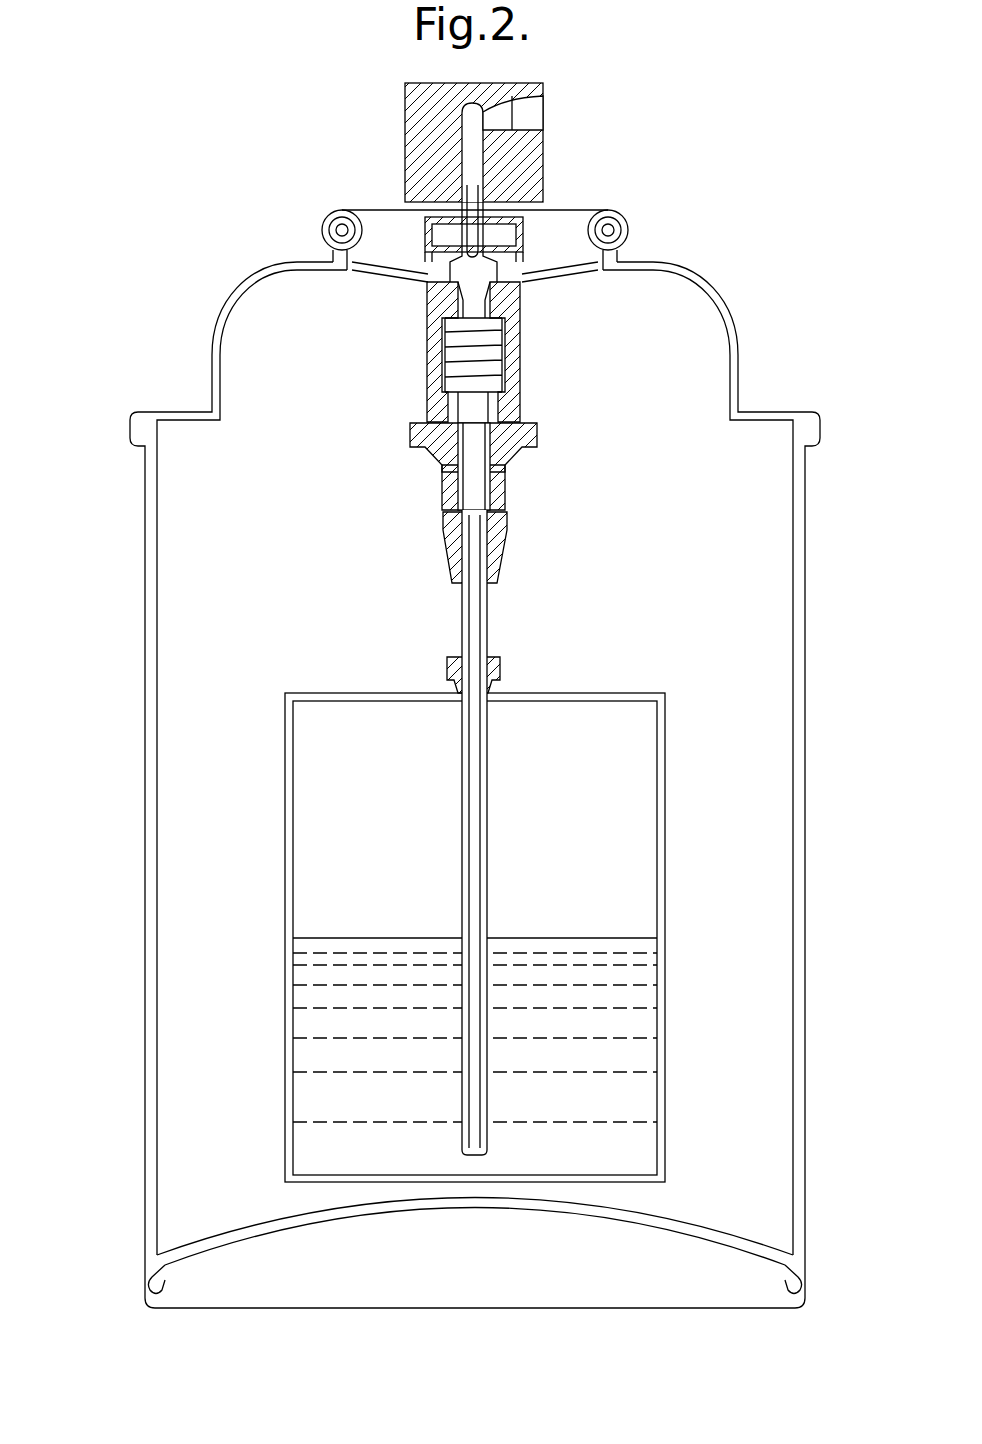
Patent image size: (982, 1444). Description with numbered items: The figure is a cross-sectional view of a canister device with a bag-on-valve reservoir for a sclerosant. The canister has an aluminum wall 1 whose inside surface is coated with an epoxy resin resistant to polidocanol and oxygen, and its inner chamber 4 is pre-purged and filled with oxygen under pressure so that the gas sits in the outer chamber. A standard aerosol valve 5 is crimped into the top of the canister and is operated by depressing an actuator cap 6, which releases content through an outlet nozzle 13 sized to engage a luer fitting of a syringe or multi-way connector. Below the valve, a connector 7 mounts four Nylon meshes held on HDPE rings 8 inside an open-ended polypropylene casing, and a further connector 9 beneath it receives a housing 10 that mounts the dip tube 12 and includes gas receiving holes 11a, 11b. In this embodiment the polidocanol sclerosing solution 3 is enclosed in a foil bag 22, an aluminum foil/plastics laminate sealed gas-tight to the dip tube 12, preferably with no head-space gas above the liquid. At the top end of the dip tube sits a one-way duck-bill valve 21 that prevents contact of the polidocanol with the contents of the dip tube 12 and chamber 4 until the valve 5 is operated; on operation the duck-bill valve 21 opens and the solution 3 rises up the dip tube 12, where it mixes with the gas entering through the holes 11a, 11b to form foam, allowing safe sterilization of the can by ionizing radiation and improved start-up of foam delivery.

The aluminum wall 1 is at (145, 863).
The polidocanol solution 3 is at (548, 975).
The canister inner chamber 4 is at (415, 663).
The aerosol valve 5 is at (430, 232).
The actuator cap 6 is at (430, 101).
The connector 7 is at (515, 302).
The HDPE rings 8 is at (455, 357).
The further connector 9 is at (500, 440).
The housing 10 is at (440, 482).
The gas receiving hole 11a is at (442, 532).
The gas receiving hole 11b is at (505, 547).
The dip tube 12 is at (462, 862).
The outlet nozzle 13 is at (525, 117).
The one-way duck-bill valve 21 is at (500, 670).
The foil bag 22 is at (395, 693).